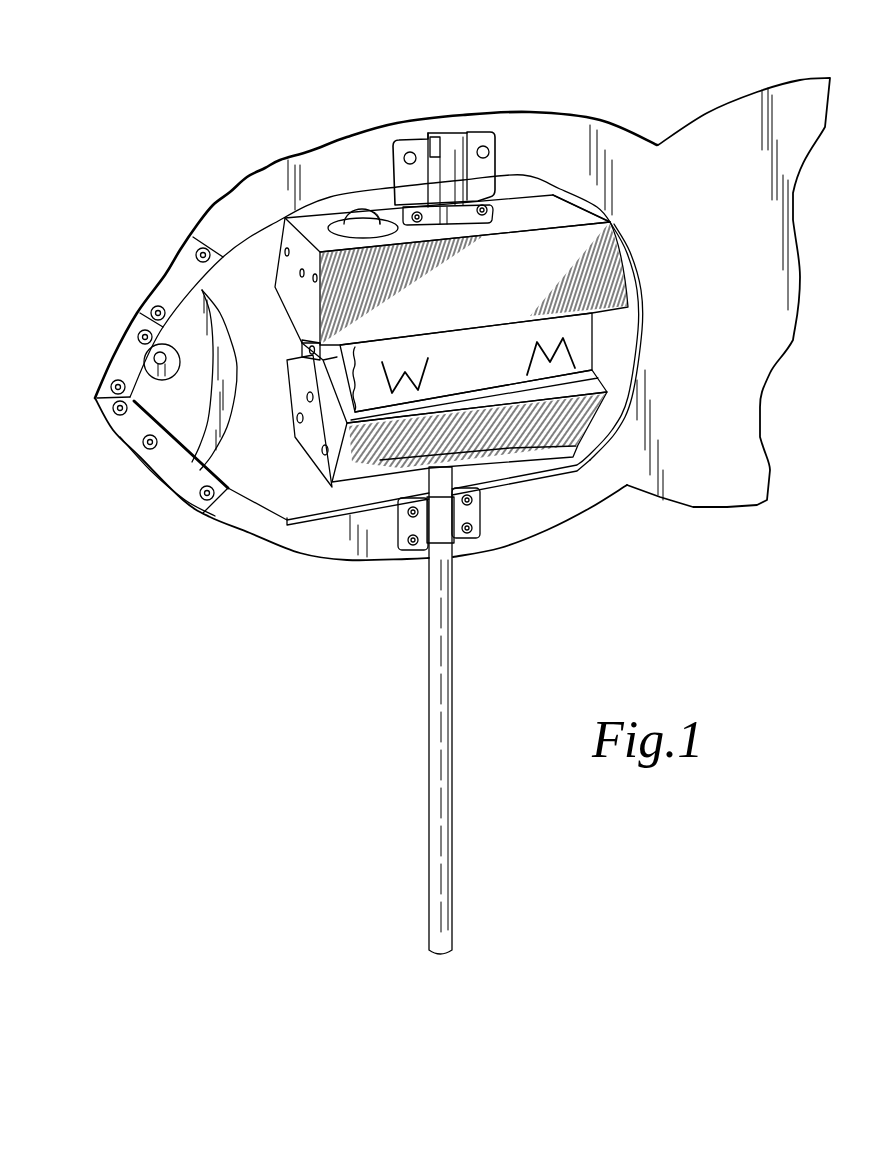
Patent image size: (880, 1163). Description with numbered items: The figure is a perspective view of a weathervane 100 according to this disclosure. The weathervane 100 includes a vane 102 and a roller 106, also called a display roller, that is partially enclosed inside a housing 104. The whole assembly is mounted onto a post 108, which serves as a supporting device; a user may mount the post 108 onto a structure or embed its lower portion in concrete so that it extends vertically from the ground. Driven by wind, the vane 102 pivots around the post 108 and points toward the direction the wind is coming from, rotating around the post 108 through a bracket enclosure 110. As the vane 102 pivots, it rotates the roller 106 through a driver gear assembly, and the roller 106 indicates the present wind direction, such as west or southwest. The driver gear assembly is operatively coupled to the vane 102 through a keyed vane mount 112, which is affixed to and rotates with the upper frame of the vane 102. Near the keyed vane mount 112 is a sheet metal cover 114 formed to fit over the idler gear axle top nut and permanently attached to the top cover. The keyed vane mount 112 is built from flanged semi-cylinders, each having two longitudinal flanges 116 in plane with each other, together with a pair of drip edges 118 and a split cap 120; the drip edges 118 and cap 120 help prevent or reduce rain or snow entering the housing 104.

The weathervane 100 is at (242, 815).
The vane 102 is at (190, 233).
The housing 104 is at (600, 273).
The roller 106 is at (583, 342).
The post 108 is at (447, 890).
The bracket enclosure 110 is at (423, 527).
The keyed vane mount 112 is at (480, 132).
The sheet metal cover 114 is at (357, 207).
The longitudinal flanges 116 is at (483, 175).
The drip edges 118 is at (463, 222).
The split cap 120 is at (451, 133).